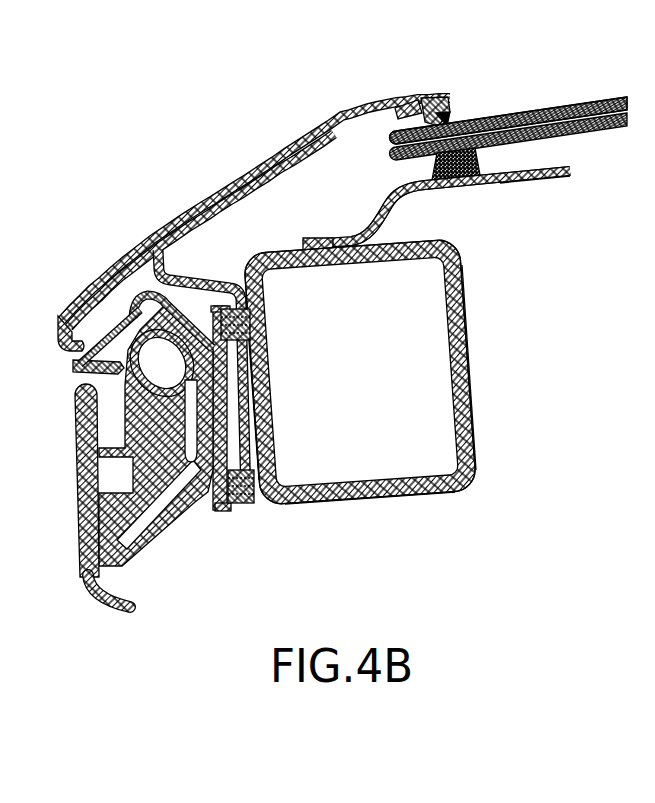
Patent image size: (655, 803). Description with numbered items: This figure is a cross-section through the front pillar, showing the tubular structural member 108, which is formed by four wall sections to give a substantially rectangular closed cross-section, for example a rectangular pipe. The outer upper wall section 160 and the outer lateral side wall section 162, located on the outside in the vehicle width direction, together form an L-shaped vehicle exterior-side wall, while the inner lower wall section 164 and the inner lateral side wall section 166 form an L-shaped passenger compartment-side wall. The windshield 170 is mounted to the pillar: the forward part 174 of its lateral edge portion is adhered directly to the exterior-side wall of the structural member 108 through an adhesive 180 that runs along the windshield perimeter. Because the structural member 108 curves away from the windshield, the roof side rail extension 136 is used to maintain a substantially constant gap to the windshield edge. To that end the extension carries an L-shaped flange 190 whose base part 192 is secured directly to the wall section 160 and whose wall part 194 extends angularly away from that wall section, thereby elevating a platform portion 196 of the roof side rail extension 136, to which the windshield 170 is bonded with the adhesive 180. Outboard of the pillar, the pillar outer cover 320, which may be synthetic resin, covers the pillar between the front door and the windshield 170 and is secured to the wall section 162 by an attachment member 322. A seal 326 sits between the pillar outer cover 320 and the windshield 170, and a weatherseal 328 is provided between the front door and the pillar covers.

The structural member 108 is at (462, 506).
The roof side rail extension 136 is at (547, 178).
The outer upper wall section 160 is at (413, 243).
The outer lateral side wall section 162 is at (268, 388).
The inner lower wall section 164 is at (347, 503).
The inner lateral side wall section 166 is at (472, 380).
The windshield 170 is at (547, 107).
The forward part of the lateral edge portion 174 is at (473, 121).
The adhesive 180 is at (473, 163).
The flange 190 is at (338, 238).
The base part 192 is at (322, 237).
The bend portion 194 is at (381, 205).
The platform portion 196 is at (500, 190).
The pillar outer cover 320 is at (258, 158).
The attachment member 322 is at (200, 277).
The seal 326 is at (423, 96).
The weatherseal 328 is at (83, 502).